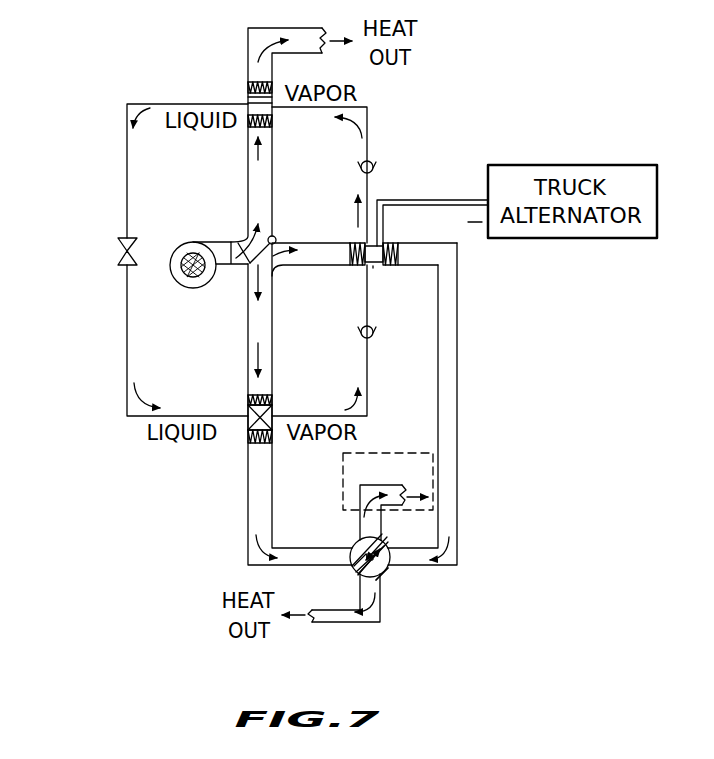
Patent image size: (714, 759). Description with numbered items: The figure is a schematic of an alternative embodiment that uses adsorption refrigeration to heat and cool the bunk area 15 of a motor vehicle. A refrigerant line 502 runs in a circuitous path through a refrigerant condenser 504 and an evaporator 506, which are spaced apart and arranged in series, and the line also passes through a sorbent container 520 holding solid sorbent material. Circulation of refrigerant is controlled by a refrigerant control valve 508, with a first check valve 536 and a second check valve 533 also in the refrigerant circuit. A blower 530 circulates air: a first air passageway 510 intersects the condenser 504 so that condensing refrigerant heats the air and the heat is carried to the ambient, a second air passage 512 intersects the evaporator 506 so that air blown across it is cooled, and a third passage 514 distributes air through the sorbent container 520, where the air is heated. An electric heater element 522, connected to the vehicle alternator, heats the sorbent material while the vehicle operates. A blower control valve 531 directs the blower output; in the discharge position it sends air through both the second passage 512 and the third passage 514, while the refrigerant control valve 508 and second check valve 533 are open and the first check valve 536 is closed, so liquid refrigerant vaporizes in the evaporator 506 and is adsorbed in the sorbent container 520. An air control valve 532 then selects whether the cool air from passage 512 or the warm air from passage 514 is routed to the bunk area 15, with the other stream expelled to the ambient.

The bunk area 15 is at (384, 452).
The refrigerant line 502 is at (370, 113).
The refrigerant condenser 504 is at (273, 123).
The evaporator 506 is at (273, 441).
The refrigerant control valve 508 is at (120, 264).
The first air passageway 510 is at (268, 186).
The second air passage 512 is at (267, 331).
The third passage 514 is at (453, 357).
The sorbent container 520 is at (390, 243).
The electric heater element 522 is at (373, 266).
The blower 530 is at (190, 243).
The blower control valve 531 is at (278, 243).
The air control valve 532 is at (393, 567).
The second check valve 533 is at (364, 326).
The first check valve 536 is at (373, 163).